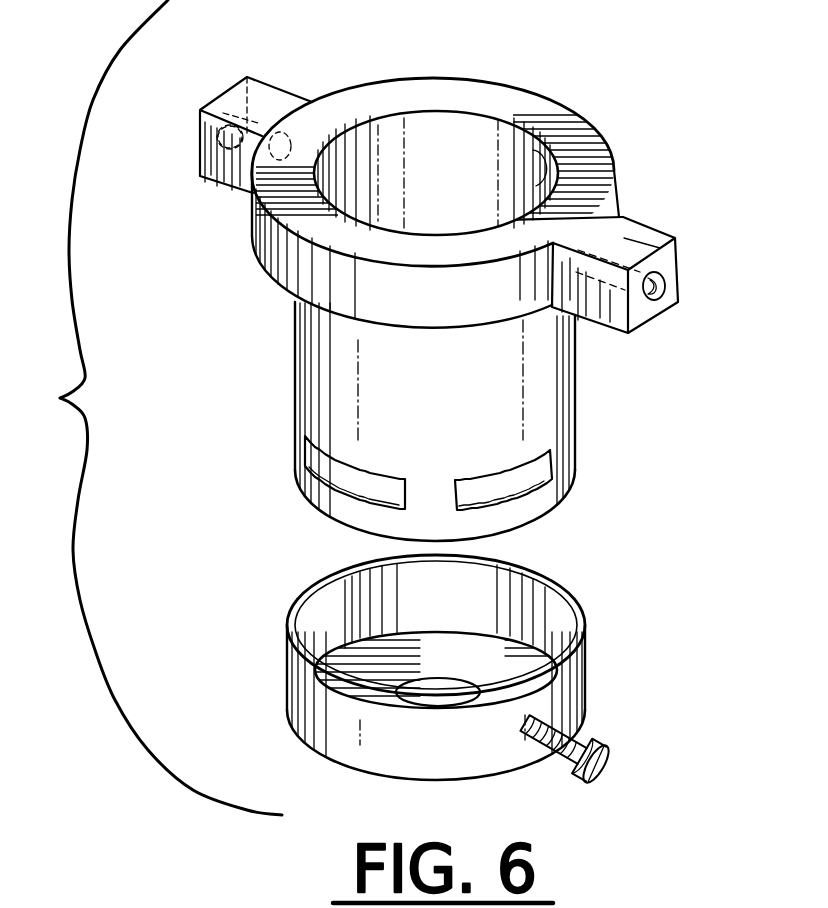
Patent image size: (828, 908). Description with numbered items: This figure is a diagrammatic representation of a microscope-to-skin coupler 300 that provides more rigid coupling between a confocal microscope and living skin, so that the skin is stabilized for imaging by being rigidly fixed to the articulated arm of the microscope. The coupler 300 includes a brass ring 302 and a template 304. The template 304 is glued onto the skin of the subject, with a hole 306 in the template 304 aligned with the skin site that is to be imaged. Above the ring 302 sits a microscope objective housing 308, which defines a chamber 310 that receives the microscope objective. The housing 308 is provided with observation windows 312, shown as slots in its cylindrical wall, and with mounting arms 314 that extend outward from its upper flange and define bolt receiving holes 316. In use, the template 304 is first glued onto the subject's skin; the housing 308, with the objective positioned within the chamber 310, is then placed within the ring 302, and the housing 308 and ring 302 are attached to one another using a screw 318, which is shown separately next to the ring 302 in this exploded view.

The microscope-to-skin coupler 300 is at (440, 272).
The brass ring 302 is at (417, 667).
The template 304 is at (524, 663).
The hole 306 is at (417, 682).
The microscope objective housing 308 is at (379, 421).
The chamber 310 is at (447, 130).
The observation windows 312 is at (487, 480).
The mounting arms 314 is at (280, 92).
The bolt receiving holes 316 is at (215, 120).
The screw 318 is at (614, 755).